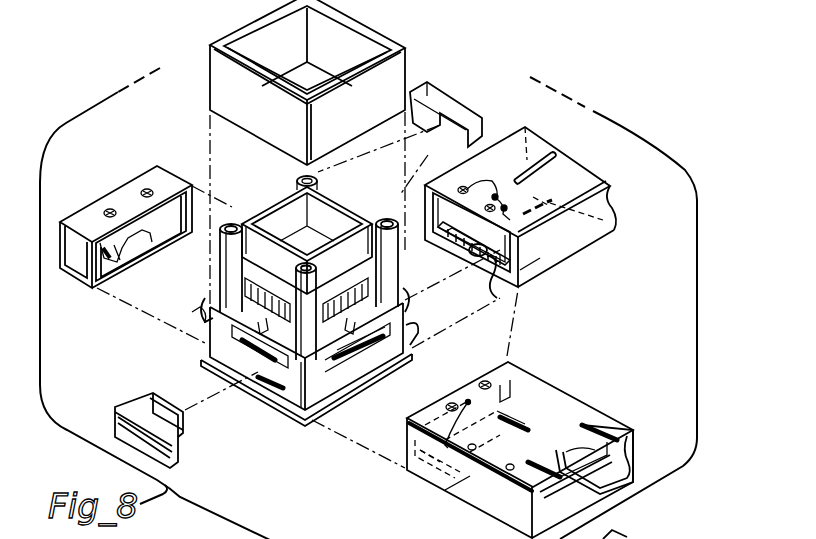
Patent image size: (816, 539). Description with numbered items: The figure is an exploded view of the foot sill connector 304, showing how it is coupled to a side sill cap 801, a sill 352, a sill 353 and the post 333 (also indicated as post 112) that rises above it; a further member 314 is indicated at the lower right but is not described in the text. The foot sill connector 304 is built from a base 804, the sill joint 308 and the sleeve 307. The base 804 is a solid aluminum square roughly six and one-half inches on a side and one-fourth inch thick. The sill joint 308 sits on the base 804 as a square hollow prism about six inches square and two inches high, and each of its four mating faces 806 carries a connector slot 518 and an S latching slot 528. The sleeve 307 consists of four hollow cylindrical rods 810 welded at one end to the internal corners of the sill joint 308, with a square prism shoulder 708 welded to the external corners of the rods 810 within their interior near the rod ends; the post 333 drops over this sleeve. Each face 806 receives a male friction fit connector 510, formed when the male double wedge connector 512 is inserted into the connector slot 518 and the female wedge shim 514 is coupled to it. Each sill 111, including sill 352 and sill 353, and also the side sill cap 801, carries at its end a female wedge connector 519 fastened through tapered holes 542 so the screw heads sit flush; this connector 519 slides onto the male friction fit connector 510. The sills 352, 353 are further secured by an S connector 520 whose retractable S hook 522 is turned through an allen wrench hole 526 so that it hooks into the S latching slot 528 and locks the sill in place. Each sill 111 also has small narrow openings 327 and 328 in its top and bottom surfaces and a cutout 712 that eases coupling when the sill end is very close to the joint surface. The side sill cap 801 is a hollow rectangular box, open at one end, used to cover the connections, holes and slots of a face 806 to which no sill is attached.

The post 112 is at (209, 47).
The post 333 is at (373, 112).
The female wedge shim 514 is at (462, 99).
The sleeve 307 is at (423, 167).
The square prism shoulder 708 is at (318, 186).
The hollow cylindrical rods 810 is at (250, 222).
The side sill cap 801 is at (88, 205).
The female wedge connector 519 is at (140, 250).
The mating face 806 is at (205, 318).
The connector slot 518 is at (205, 352).
The male double wedge connector 512 is at (117, 415).
The S latching slot 528 is at (263, 388).
The foot sill connector 304 is at (305, 420).
The base 804 is at (351, 394).
The male friction fit connector 510 is at (380, 360).
The sill joint 308 is at (415, 302).
The retractable S hook 522 is at (462, 256).
The tapered holes 542 is at (516, 176).
The sill 111 is at (617, 196).
The sill 352 is at (582, 247).
The S connector 520 is at (543, 273).
The cutout 712 is at (488, 285).
The small narrow opening 327 is at (546, 412).
The small narrow opening 328 is at (527, 436).
The sill 353 is at (629, 436).
The allen wrench hole 526 is at (421, 480).
The bracket 314 is at (623, 534).